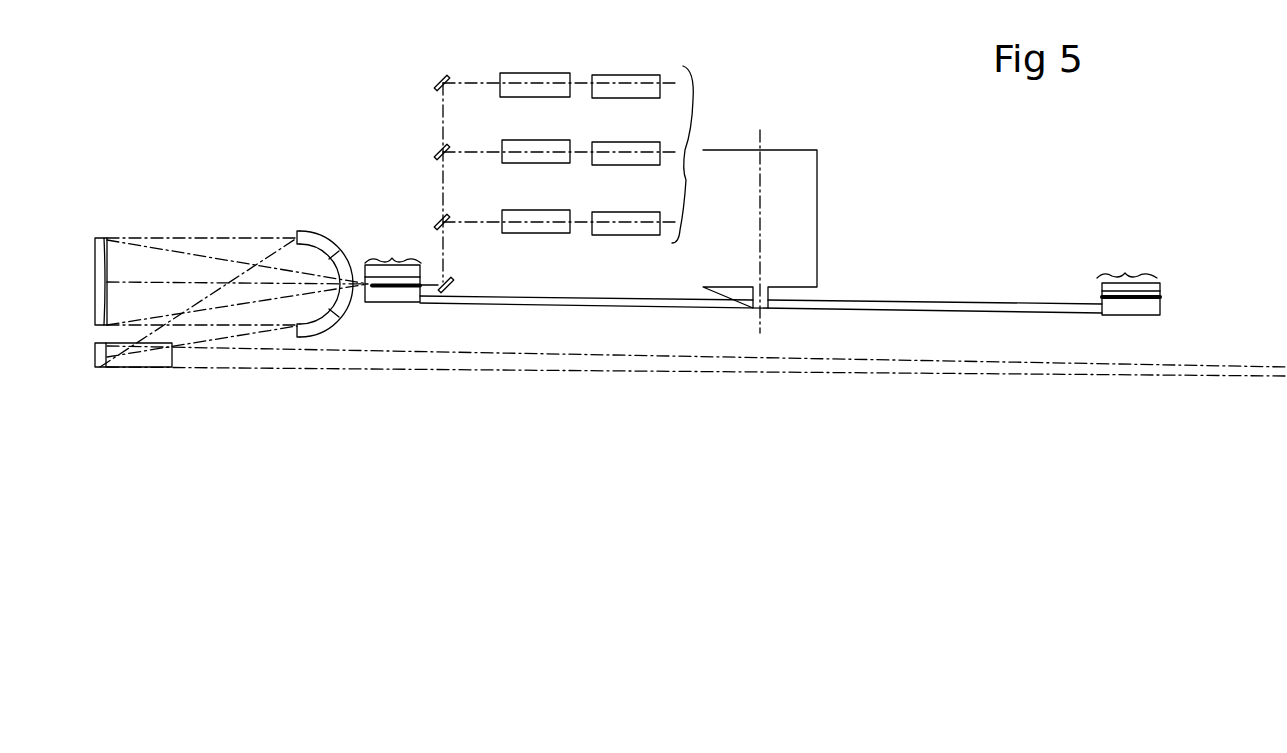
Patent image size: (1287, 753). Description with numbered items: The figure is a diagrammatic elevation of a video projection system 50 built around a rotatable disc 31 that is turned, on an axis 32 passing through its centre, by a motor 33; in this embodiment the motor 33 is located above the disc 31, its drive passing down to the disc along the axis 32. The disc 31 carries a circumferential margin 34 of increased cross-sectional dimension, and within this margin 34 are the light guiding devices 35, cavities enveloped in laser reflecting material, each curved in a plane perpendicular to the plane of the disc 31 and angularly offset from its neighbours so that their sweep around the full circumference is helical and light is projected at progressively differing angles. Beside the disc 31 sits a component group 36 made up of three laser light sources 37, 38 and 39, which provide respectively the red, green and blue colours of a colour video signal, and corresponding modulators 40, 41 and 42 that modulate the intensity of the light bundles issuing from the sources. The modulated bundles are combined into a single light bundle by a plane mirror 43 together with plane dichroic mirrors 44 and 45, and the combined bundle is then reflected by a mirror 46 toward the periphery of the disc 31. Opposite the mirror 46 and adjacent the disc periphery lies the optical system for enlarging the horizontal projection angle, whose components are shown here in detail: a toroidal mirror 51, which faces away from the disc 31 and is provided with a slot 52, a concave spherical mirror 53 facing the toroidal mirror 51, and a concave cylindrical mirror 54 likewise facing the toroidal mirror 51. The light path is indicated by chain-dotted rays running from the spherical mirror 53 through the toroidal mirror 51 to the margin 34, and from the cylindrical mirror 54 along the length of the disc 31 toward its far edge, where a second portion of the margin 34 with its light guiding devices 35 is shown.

The disc 31 is at (955, 301).
The axis 32 is at (762, 323).
The motor 33 is at (795, 150).
The circumferential margin 34 is at (761, 248).
The light guiding devices 35 is at (402, 290).
The component group 36 is at (690, 150).
The laser light source 37 is at (623, 236).
The laser light source 38 is at (600, 166).
The laser light source 39 is at (626, 75).
The modulator 40 is at (532, 234).
The modulator 41 is at (517, 164).
The modulator 42 is at (520, 73).
The plane mirror 43 is at (437, 78).
The plane dichroic mirror 44 is at (440, 145).
The plane dichroic mirror 45 is at (437, 212).
The mirror 46 is at (440, 278).
The video projection system 50 is at (1063, 206).
The toroidal mirror 51 is at (308, 228).
The slot 52 is at (347, 243).
The concave spherical mirror 53 is at (98, 237).
The concave cylindrical mirror 54 is at (168, 367).